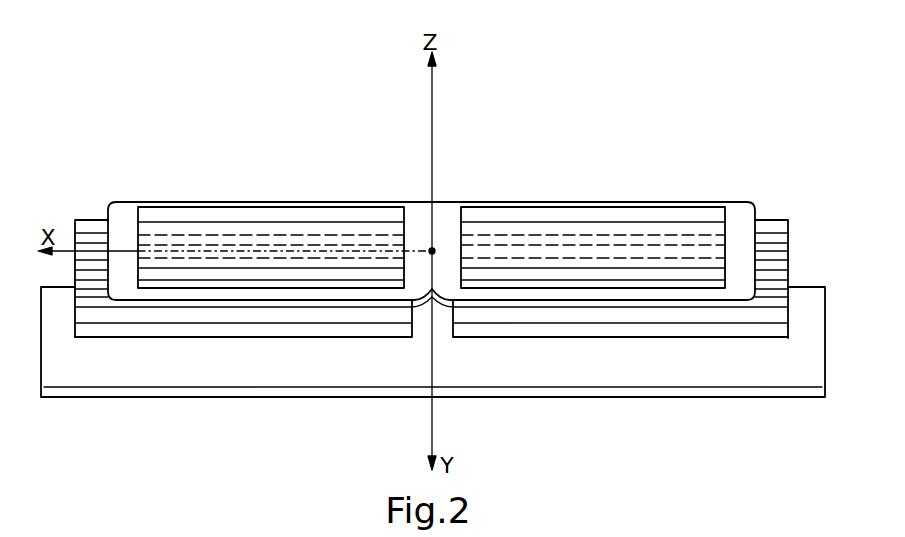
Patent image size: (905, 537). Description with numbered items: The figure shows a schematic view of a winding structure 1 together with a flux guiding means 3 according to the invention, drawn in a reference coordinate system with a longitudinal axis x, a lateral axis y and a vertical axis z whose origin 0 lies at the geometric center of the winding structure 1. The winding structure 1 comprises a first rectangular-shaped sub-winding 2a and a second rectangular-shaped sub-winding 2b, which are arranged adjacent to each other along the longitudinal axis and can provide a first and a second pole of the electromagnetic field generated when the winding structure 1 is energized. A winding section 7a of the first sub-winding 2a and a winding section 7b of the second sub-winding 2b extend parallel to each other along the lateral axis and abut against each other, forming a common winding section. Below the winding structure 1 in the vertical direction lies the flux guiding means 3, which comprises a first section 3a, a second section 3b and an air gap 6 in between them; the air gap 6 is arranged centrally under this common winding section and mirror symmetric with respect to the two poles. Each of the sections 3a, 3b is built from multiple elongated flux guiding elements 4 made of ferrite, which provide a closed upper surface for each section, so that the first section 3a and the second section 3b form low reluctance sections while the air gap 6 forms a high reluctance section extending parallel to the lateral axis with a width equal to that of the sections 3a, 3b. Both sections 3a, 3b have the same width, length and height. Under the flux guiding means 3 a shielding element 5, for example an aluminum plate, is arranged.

The origin 0 is at (434, 249).
The winding structure 1 is at (732, 218).
The first rectangular-shaped sub-winding 2a is at (590, 206).
The second rectangular-shaped sub-winding 2b is at (235, 206).
The flux guiding means 3 is at (764, 217).
The first section 3a is at (553, 325).
The second section 3b is at (255, 325).
The flux guiding elements 4 is at (102, 224).
The shielding element 5 is at (792, 390).
The air gap 6 is at (418, 310).
The winding section 7a is at (447, 222).
The winding section 7b is at (418, 222).